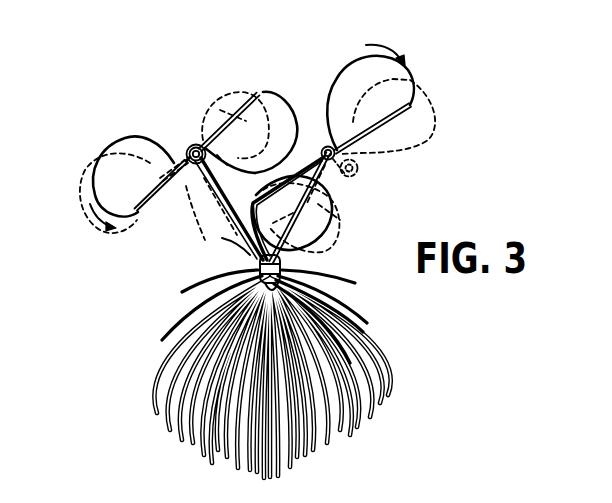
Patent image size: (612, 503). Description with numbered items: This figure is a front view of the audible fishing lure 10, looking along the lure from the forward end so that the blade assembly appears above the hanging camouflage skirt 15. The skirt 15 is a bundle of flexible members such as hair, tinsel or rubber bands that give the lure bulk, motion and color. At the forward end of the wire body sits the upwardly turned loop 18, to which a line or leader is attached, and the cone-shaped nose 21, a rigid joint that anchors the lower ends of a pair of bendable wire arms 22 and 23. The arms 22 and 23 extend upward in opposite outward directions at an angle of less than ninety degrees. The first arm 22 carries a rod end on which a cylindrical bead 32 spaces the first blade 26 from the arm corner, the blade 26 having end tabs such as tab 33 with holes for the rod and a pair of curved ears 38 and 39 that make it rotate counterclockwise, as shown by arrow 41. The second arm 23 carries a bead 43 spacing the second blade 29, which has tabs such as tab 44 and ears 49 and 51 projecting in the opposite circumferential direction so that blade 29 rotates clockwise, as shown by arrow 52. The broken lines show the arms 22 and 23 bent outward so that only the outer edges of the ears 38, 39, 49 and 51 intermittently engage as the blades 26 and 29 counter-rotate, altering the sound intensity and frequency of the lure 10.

The audible fishing lure 10 is at (444, 50).
The flexible camouflage skirt 15 is at (193, 430).
The loop 18 is at (240, 267).
The nose 21 is at (322, 274).
The first arm 22 is at (203, 188).
The second arm 23 is at (330, 193).
The first blade 26 is at (262, 88).
The second blade 29 is at (409, 73).
The cylindrical bead 32 is at (193, 144).
The end tab 33 is at (216, 170).
The ear 38 is at (118, 147).
The ear 39 is at (240, 117).
The arrow 41 is at (90, 205).
The bead 43 is at (326, 146).
The tab 44 is at (343, 153).
The ear 49 is at (318, 228).
The ear 51 is at (350, 78).
The arrow 52 is at (388, 43).